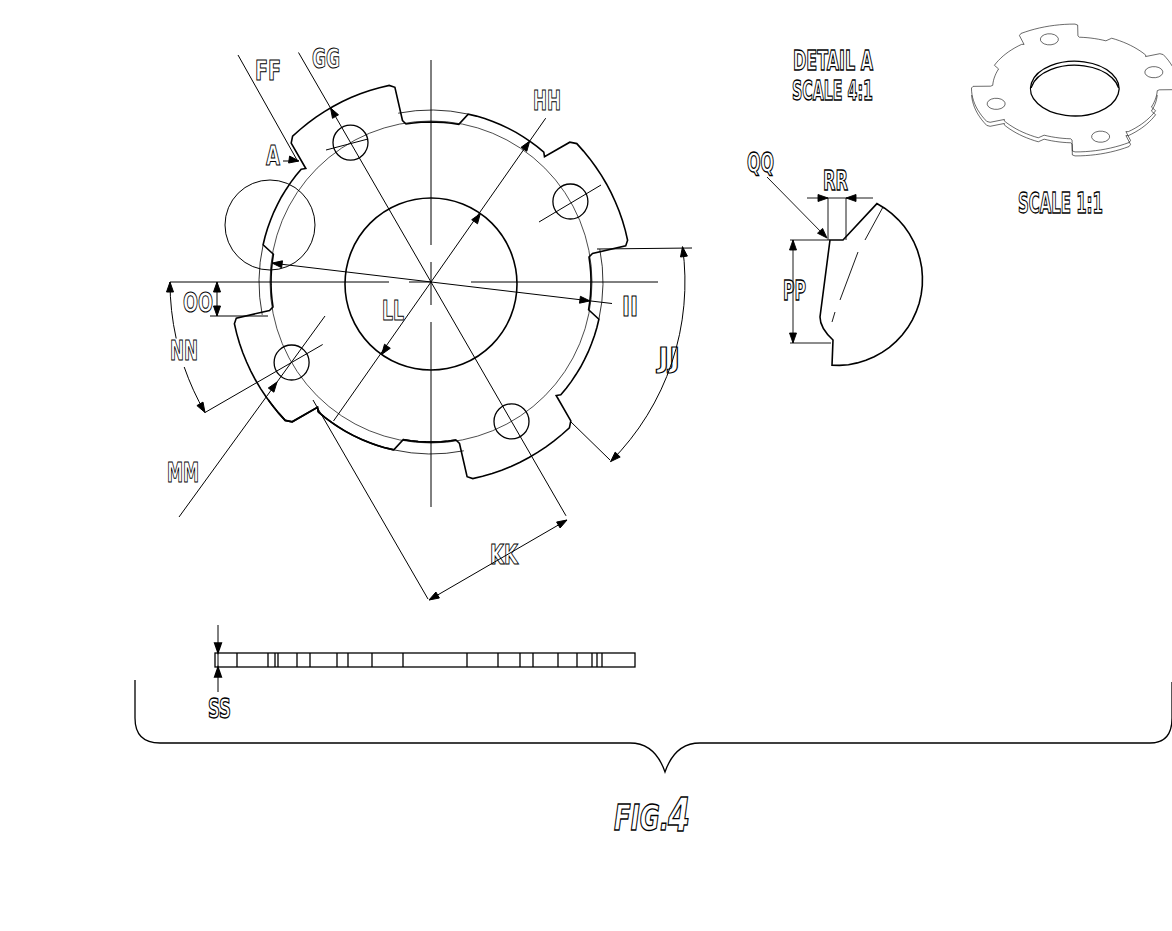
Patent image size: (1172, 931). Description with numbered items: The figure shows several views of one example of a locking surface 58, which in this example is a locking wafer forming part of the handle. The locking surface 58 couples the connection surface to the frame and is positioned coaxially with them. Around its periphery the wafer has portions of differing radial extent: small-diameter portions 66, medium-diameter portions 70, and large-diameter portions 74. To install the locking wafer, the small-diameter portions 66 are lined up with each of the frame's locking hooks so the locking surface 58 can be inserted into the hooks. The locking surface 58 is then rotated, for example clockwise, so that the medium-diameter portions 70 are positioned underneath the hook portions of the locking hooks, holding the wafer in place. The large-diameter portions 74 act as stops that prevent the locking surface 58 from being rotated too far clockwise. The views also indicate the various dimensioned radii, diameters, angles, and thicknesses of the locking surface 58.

The locking surface 58 is at (540, 366).
The small-diameter portions 66 is at (407, 443).
The medium-diameter portions 70 is at (360, 438).
The large-diameter portions 74 is at (282, 424).